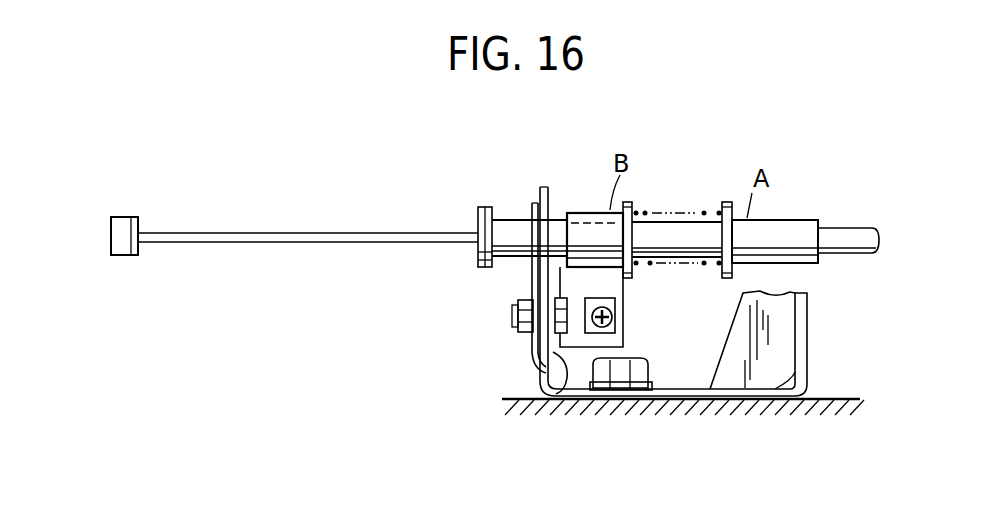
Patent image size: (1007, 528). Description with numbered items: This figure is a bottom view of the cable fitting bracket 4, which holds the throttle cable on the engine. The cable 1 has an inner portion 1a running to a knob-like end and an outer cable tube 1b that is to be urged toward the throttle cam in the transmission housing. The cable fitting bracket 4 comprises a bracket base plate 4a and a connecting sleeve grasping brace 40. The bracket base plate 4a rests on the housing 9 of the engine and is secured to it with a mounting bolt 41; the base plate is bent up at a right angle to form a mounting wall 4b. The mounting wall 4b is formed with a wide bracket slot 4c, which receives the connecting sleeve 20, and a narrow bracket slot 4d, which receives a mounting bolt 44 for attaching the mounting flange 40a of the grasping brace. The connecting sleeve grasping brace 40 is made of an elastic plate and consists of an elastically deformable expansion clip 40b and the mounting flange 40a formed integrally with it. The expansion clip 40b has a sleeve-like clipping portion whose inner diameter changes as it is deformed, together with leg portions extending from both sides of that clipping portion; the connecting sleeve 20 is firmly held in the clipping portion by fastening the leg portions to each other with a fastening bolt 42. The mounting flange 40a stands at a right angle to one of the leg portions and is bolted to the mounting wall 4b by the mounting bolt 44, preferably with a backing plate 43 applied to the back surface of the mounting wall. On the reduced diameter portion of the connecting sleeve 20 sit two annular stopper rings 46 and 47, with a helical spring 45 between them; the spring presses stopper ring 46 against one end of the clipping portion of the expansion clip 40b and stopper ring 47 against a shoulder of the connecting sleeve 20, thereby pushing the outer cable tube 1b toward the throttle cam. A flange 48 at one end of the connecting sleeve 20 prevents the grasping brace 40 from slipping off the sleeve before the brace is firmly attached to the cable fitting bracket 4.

The control rod 1 is at (800, 218).
The knob end of control rod 1a is at (262, 243).
The outer cable tube 1b is at (862, 255).
The cable fitting bracket 4 is at (706, 292).
The bracket base plate 4a is at (693, 397).
The mounting wall 4b is at (542, 185).
The wide bracket slot 4c is at (530, 212).
The narrow bracket slot 4d is at (542, 338).
The housing 9 is at (835, 398).
The connecting sleeve 20 is at (775, 218).
The connecting sleeve grasping brace 40 is at (592, 212).
The mounting flange 40a is at (562, 388).
The expansion clip 40b is at (612, 288).
The mounting bolt 41 is at (627, 380).
The fastening bolt 42 is at (613, 327).
The backing plate 43 is at (528, 279).
The mounting bolt 44 is at (512, 317).
The helical spring 45 is at (703, 210).
The annular stopper ring 46 is at (726, 200).
The annular stopper ring 47 is at (628, 203).
The flange 48 is at (474, 269).